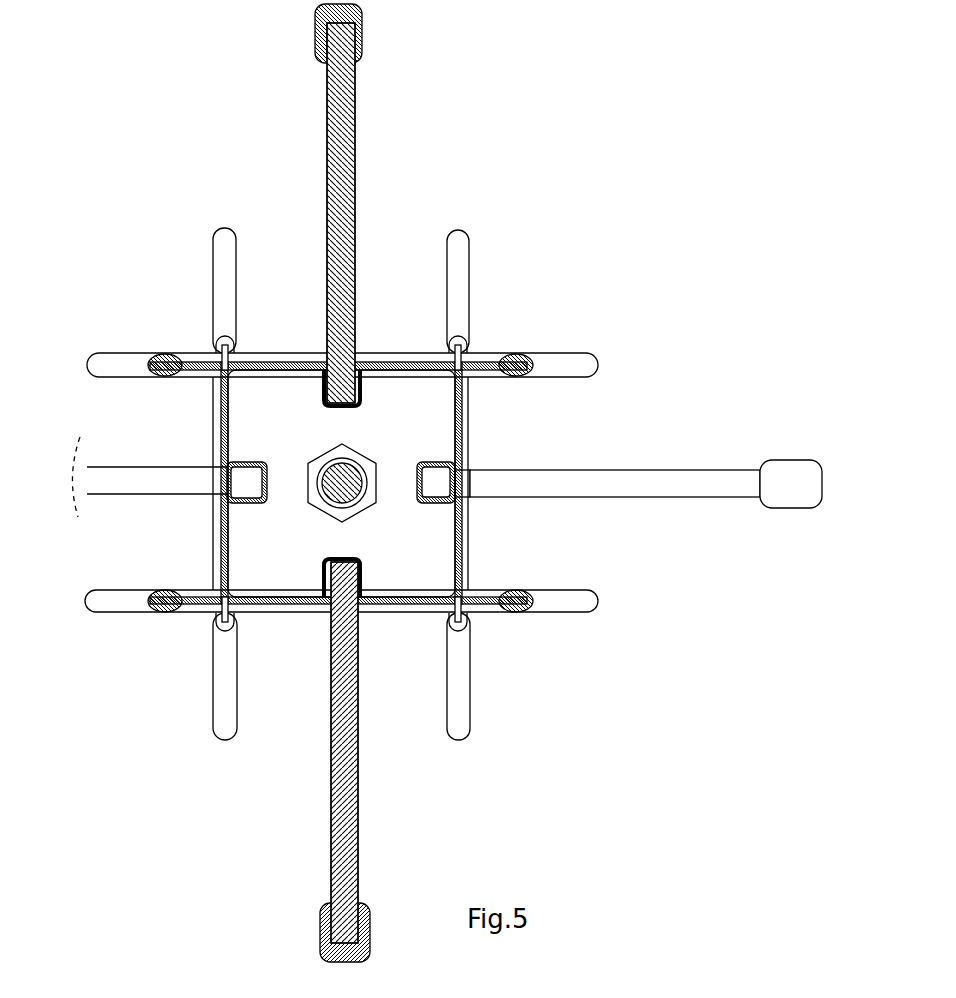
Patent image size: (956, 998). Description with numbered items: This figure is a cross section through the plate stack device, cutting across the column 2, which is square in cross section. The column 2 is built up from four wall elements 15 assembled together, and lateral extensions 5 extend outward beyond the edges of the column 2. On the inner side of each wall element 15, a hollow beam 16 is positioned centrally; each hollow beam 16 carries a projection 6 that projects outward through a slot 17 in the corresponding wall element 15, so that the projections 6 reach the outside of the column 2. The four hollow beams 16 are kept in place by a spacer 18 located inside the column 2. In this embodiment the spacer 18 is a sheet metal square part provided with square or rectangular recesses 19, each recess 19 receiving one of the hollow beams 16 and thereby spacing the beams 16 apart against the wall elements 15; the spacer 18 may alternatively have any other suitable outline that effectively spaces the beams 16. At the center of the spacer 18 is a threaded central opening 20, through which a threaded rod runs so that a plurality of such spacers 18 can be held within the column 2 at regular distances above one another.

The column 2 is at (480, 403).
The lateral extensions 5 is at (487, 365).
The projections 6 is at (340, 113).
The wall element 15 is at (182, 618).
The hollow beam 16 is at (428, 505).
The slot 17 is at (357, 360).
The spacer 18 is at (253, 390).
The recess 19 is at (468, 498).
The threaded central opening 20 is at (330, 482).